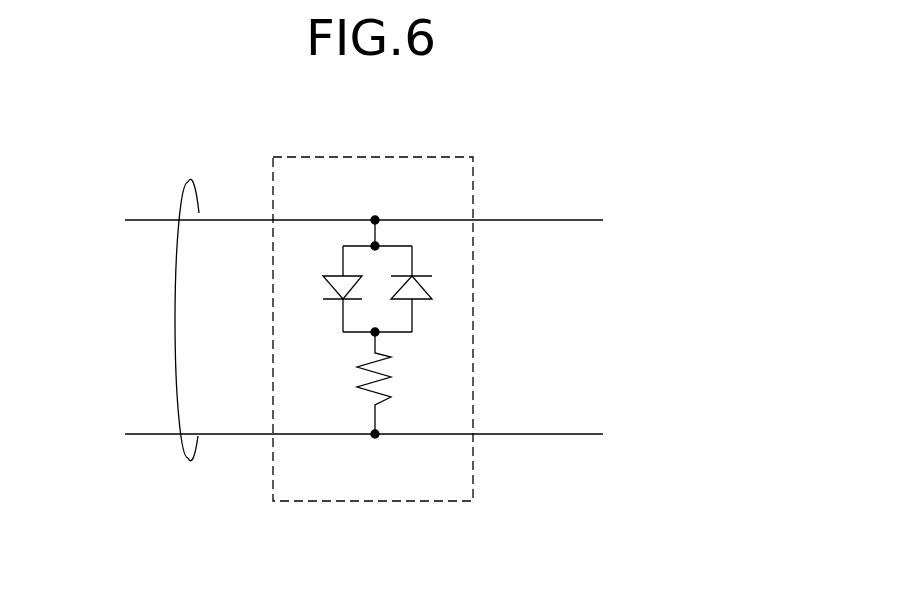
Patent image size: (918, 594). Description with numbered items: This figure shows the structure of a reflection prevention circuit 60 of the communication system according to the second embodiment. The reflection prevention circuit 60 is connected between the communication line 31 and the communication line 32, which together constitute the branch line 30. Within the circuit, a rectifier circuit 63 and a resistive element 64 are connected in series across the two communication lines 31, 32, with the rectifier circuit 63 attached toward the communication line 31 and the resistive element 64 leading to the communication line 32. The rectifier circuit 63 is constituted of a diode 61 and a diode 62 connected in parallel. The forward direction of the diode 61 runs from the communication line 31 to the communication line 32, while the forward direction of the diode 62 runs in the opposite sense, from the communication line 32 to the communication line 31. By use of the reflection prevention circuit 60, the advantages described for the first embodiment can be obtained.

The branch line 30 is at (189, 458).
The communication line 31 is at (137, 217).
The communication line 32 is at (130, 432).
The reflection prevention circuit 60 is at (368, 157).
The diode 61 is at (323, 288).
The diode 62 is at (432, 288).
The rectifier circuit 63 is at (412, 332).
The resistive element 64 is at (390, 396).